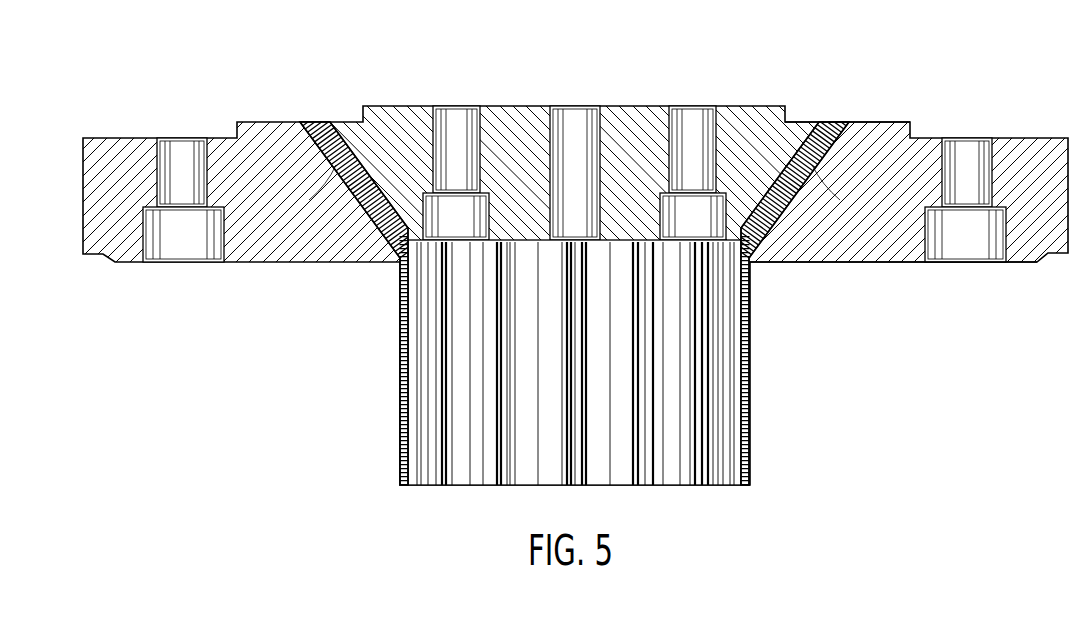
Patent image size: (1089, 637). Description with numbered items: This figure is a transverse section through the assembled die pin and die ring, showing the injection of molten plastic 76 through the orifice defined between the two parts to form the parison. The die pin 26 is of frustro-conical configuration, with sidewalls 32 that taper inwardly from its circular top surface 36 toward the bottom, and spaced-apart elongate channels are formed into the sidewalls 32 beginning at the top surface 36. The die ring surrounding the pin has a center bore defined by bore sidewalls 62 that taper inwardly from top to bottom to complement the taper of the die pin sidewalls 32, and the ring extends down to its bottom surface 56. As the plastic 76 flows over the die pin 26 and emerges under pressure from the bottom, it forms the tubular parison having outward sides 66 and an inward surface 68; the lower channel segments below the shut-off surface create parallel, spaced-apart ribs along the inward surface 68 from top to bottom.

The die pin 26 is at (742, 94).
The sidewalls 32 is at (855, 121).
The top surface 36 is at (495, 105).
The bottom surface 56 is at (897, 263).
The bore sidewalls 62 is at (378, 222).
The outward sides 66 is at (751, 416).
The inward surface 68 is at (705, 320).
The molten plastic 76 is at (820, 174).